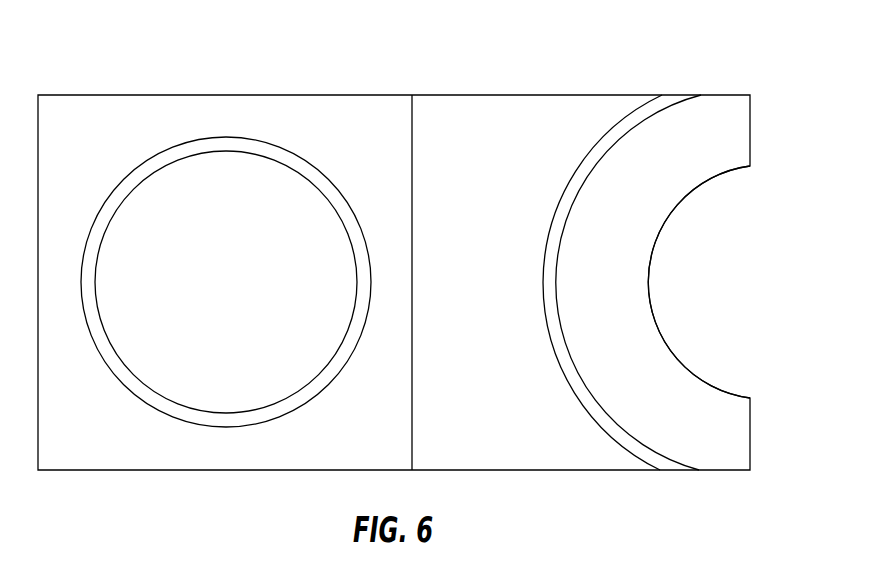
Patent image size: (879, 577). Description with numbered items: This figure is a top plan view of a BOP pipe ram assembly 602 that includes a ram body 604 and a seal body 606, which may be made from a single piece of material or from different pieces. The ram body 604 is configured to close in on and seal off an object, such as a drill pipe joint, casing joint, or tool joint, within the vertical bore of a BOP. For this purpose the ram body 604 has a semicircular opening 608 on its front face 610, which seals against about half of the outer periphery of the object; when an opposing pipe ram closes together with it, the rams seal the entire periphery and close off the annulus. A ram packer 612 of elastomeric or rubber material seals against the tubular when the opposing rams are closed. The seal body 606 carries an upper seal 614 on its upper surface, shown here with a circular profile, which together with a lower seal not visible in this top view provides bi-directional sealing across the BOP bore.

The BOP pipe ram assembly 602 is at (328, 68).
The ram body 604 is at (460, 95).
The seal body 606 is at (197, 95).
The semicircular opening 608 is at (640, 318).
The front face 610 is at (750, 132).
The ram packer 612 is at (675, 95).
The upper seal 614 is at (320, 185).